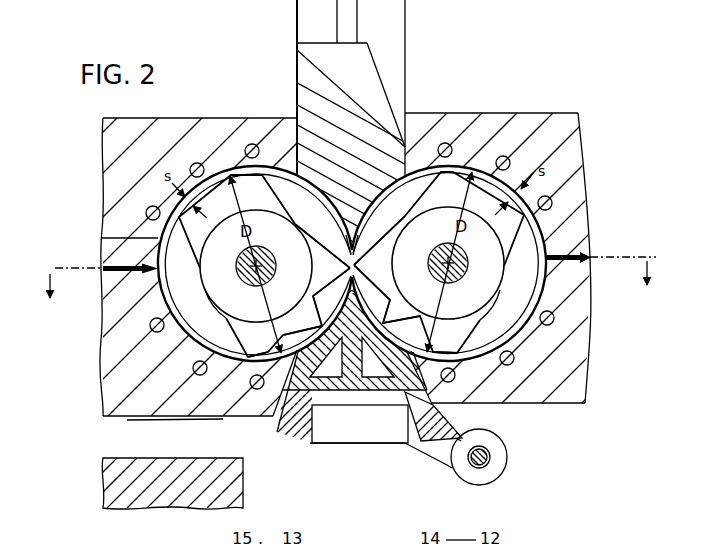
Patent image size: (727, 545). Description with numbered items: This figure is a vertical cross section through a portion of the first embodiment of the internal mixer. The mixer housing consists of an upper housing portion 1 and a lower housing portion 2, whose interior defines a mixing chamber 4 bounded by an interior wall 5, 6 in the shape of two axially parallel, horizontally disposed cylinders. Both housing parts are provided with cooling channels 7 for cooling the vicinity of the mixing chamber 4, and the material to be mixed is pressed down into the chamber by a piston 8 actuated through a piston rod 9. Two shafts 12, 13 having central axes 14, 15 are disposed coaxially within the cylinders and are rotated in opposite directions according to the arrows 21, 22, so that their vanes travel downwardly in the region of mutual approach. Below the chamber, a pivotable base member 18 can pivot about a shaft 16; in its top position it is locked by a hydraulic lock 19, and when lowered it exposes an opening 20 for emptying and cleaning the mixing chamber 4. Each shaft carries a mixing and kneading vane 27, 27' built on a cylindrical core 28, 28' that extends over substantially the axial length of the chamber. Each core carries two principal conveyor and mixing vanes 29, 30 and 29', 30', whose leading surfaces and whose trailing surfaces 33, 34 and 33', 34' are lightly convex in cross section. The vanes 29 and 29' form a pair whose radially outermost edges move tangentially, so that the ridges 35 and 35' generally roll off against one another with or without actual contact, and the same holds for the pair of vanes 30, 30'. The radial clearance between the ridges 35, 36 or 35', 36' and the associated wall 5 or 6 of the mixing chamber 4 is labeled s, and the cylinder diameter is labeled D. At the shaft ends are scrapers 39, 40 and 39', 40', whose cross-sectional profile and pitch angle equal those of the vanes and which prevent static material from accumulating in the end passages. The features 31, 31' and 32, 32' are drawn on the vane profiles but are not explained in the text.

The upper housing portion 1 is at (363, 264).
The lower housing portion 2 is at (578, 384).
The mixing chamber 4 is at (528, 228).
The interior wall 5 is at (543, 237).
The interior wall 6 is at (101, 238).
The cooling channels 7 is at (146, 213).
The piston 8 is at (307, 65).
The piston rod 9 is at (348, 19).
The shaft 12 is at (433, 271).
The shaft 13 is at (237, 277).
The central axis 14 is at (455, 269).
The central axis 15 is at (262, 274).
The shaft 16 is at (491, 459).
The pivotable base member 18 is at (357, 377).
The hydraulic lock 19 is at (253, 447).
The opening 20 is at (417, 368).
The arrow 21 is at (428, 243).
The arrow 22 is at (276, 246).
The mixing and kneading vane 27 is at (577, 278).
The mixing and kneading vane 27' is at (124, 288).
The cylindrical core 28 is at (562, 297).
The cylindrical core 28' is at (134, 303).
The principal conveyor and mixing vane 29 is at (372, 278).
The principal conveyor and mixing vane 29' is at (331, 276).
The principal conveyor and mixing vane 30 is at (447, 337).
The principal conveyor and mixing vane 30' is at (257, 340).
The rotor wing flank 31 is at (377, 309).
The rotor wing flank 31' is at (328, 310).
The rotor body surface 32 is at (496, 309).
The rotor body surface 32' is at (210, 311).
The trailing surface 33 is at (379, 239).
The trailing surface 33' is at (322, 241).
The trailing surface 34 is at (402, 319).
The trailing surface 34' is at (301, 321).
The ridge 35 is at (365, 226).
The ridge 35' is at (347, 226).
The ridge 36 is at (478, 386).
The ridge 36' is at (215, 391).
The scraper 39 is at (450, 185).
The scraper 39' is at (250, 188).
The scraper 40 is at (387, 356).
The scraper 40' is at (323, 356).